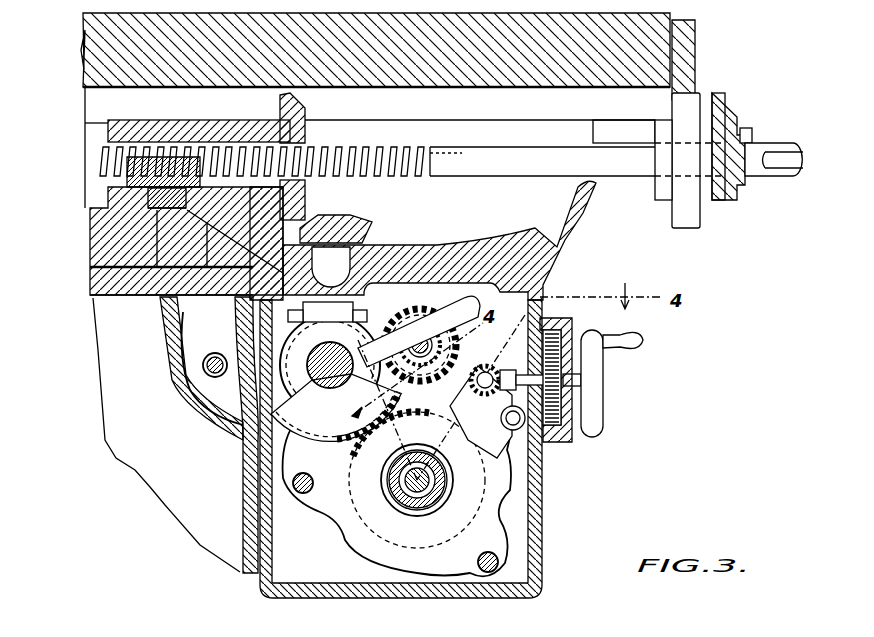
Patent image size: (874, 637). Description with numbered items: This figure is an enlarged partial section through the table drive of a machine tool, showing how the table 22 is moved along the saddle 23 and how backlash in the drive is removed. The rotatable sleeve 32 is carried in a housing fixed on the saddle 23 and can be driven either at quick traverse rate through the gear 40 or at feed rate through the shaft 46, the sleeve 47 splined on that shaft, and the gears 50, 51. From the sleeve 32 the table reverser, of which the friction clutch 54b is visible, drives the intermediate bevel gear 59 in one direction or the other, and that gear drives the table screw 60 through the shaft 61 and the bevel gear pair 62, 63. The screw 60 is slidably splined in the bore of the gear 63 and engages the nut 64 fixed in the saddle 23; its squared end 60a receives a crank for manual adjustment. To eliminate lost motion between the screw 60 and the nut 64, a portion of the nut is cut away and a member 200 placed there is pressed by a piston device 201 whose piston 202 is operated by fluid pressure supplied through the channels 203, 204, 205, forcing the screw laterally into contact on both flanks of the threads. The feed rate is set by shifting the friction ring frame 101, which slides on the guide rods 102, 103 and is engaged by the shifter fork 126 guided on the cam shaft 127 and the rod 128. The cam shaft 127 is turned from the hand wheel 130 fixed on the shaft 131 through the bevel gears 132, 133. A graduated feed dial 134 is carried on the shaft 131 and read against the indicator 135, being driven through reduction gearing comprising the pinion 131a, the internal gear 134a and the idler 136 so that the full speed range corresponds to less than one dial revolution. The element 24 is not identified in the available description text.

The table 22 is at (100, 66).
The nut 64 is at (180, 138).
The bevel gear 63 is at (308, 112).
The table screw 60 is at (352, 157).
The squared end 60a is at (778, 175).
The bevel gear 62 is at (346, 224).
The shaft 61 is at (332, 266).
The friction clutch 54b is at (125, 190).
The member 200 is at (150, 198).
The piston device 201 is at (150, 212).
The saddle 23 is at (112, 252).
The base plate 24 is at (92, 292).
The piston 202 is at (132, 297).
The channel 203 is at (205, 290).
The channel 205 is at (243, 282).
The channel 204 is at (172, 300).
The intermediate bevel gear 59 is at (284, 335).
The rotatable sleeve 32 is at (318, 368).
The gear 51 is at (308, 427).
The shaft 46 is at (408, 478).
The sleeve 47 is at (421, 500).
The guide rod 102 is at (303, 494).
The frame 101 is at (330, 518).
The gear 50 is at (368, 538).
The guide rod 103 is at (486, 556).
The gear 40 is at (422, 312).
The indicator 135 is at (555, 318).
The idler 136 is at (556, 322).
The bevel gear 133 is at (482, 370).
The cam shaft 127 is at (500, 372).
The bevel gear 132 is at (490, 405).
The shifter fork 126 is at (468, 430).
The rod 128 is at (538, 452).
The graduated feed dial 134 is at (562, 440).
The internal gear 134a is at (578, 432).
The pinion 131a is at (595, 412).
The hand wheel 130 is at (598, 392).
The shaft 131 is at (575, 382).